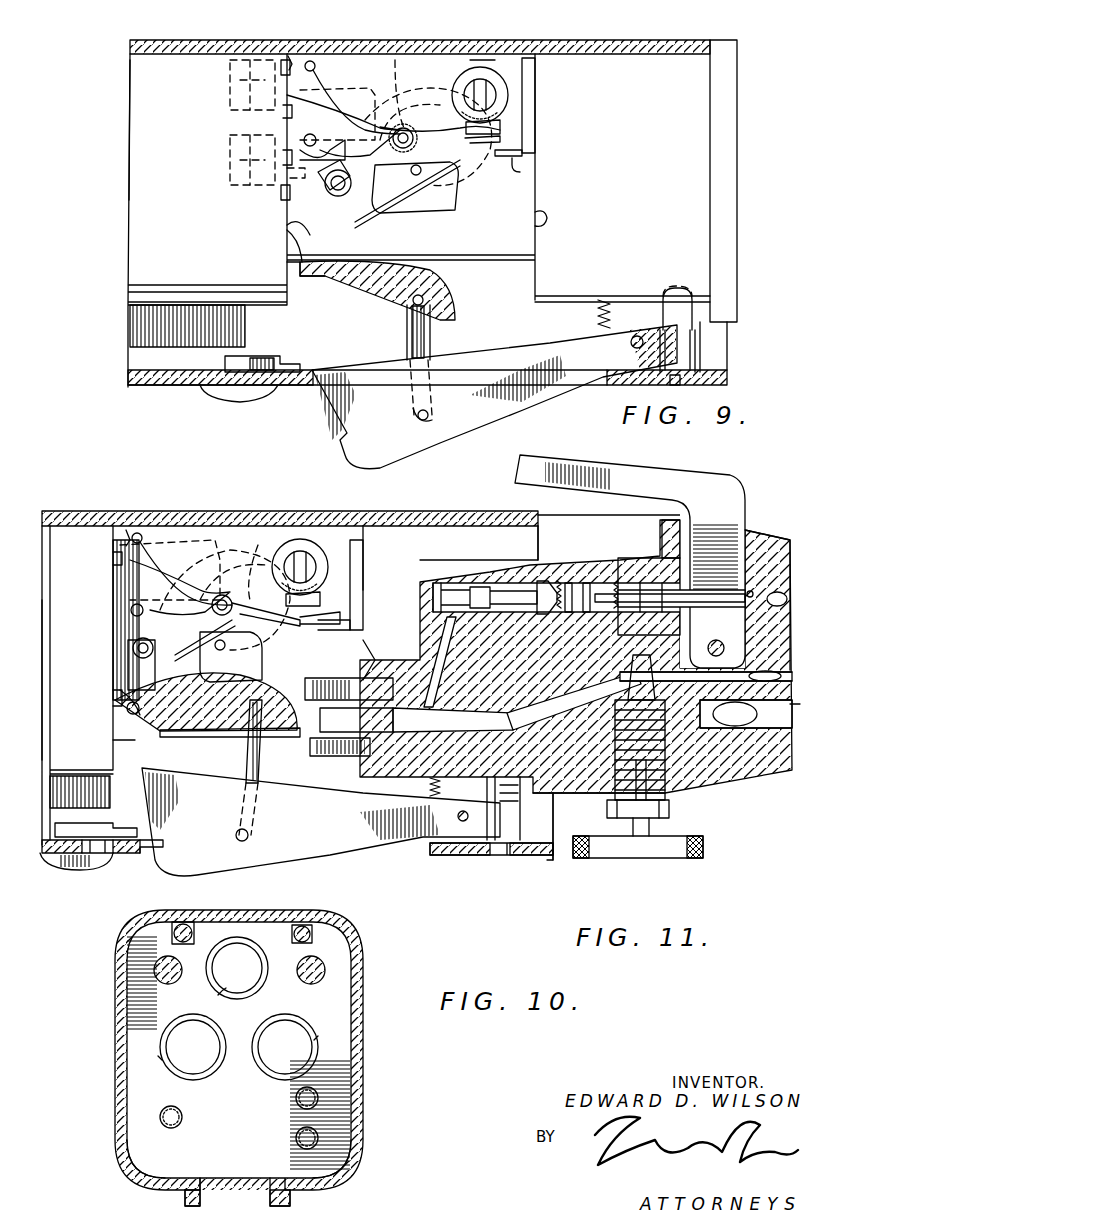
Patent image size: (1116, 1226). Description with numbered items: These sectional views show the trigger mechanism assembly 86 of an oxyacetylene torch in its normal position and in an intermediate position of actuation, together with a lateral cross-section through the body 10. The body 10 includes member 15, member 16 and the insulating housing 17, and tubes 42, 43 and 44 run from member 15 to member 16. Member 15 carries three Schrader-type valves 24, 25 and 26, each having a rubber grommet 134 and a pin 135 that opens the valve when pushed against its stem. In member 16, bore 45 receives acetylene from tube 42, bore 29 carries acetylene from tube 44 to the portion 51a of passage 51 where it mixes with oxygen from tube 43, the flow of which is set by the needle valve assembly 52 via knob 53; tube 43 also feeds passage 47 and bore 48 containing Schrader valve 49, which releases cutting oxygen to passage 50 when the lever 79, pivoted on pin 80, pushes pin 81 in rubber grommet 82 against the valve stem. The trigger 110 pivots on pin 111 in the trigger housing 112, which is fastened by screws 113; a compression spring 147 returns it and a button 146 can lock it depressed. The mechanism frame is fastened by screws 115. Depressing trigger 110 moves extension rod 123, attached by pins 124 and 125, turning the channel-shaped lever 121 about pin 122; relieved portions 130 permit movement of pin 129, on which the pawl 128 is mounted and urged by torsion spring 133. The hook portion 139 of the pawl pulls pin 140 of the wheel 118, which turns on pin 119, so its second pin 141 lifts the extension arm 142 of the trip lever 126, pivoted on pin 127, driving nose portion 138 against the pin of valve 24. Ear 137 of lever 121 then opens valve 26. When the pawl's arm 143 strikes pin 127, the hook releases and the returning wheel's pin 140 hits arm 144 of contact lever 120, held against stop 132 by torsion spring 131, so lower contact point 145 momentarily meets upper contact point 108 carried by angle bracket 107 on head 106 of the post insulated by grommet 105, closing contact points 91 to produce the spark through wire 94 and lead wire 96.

In FIG. 9, the body 10 is at (300, 24).
In FIG. 11, the body 10 is at (393, 508).
In FIG. 10, the body 10 is at (365, 973).
In FIG. 9, the member 15 is at (130, 130).
In FIG. 11, the member 15 is at (48, 720).
In FIG. 10, the member 15 is at (145, 1154).
In FIG. 9, the member 16 is at (700, 100).
In FIG. 11, the member 16 is at (470, 530).
In FIG. 10, the housing 17 is at (350, 1160).
In FIG. 10, the Schrader-type valve 24 is at (215, 997).
In FIG. 10, the Schrader-type valve 25 is at (322, 1035).
In FIG. 10, the Schrader-type valve 26 is at (156, 1059).
In FIG. 11, the bore 29 is at (750, 718).
In FIG. 11, the tube 42 is at (308, 740).
In FIG. 10, the tube 42 is at (320, 1098).
In FIG. 11, the tube 43 is at (345, 756).
In FIG. 10, the tube 43 is at (158, 1118).
In FIG. 11, the tube 44 is at (310, 752).
In FIG. 10, the tube 44 is at (320, 1135).
In FIG. 11, the bore 45 is at (680, 790).
In FIG. 11, the passage 47 is at (362, 618).
In FIG. 11, the bore 48 is at (450, 585).
In FIG. 11, the Schrader valve 49 is at (545, 578).
In FIG. 11, the passage 50 is at (750, 565).
In FIG. 11, the passage 51 is at (568, 793).
In FIG. 11, the portion of passage 51a is at (788, 672).
In FIG. 11, the needle valve assembly 52 is at (686, 818).
In FIG. 11, the knob 53 is at (703, 850).
In FIG. 11, the lever 79 is at (550, 470).
In FIG. 11, the pin 80 is at (714, 640).
In FIG. 11, the pin 81 is at (715, 555).
In FIG. 11, the rubber grommet 82 is at (668, 565).
In FIG. 9, the trigger mechanism assembly 86 is at (488, 54).
In FIG. 11, the trigger mechanism assembly 86 is at (126, 748).
In FIG. 9, the contact points 91 is at (453, 120).
In FIG. 9, the wire 94 is at (290, 58).
In FIG. 11, the wire 94 is at (132, 526).
In FIG. 10, the wire 94 is at (150, 922).
In FIG. 10, the lead wire 96 is at (300, 922).
In FIG. 9, the insulating grommet 105 is at (524, 55).
In FIG. 11, the insulating grommet 105 is at (355, 540).
In FIG. 9, the head 106 is at (500, 90).
In FIG. 11, the head 106 is at (310, 566).
In FIG. 9, the angle bracket 107 is at (488, 114).
In FIG. 11, the angle bracket 107 is at (318, 592).
In FIG. 9, the upper contact point 108 is at (490, 130).
In FIG. 11, the upper contact point 108 is at (318, 603).
In FIG. 9, the trigger 110 is at (335, 418).
In FIG. 11, the trigger 110 is at (321, 822).
In FIG. 9, the pin 111 is at (632, 344).
In FIG. 11, the pin 111 is at (466, 828).
In FIG. 9, the trigger housing 112 is at (185, 388).
In FIG. 11, the trigger housing 112 is at (548, 862).
In FIG. 10, the trigger housing 112 is at (188, 1196).
In FIG. 11, the screws 113 is at (515, 855).
In FIG. 10, the screws 115 is at (160, 972).
In FIG. 9, the wheel 118 is at (459, 57).
In FIG. 11, the wheel 118 is at (267, 536).
In FIG. 9, the pin 119 is at (405, 60).
In FIG. 11, the pin 119 is at (290, 540).
In FIG. 9, the contact lever 120 is at (515, 154).
In FIG. 9, the channel-shaped lever 121 is at (355, 280).
In FIG. 11, the channel-shaped lever 121 is at (200, 738).
In FIG. 9, the pin 122 is at (285, 262).
In FIG. 11, the pin 122 is at (125, 712).
In FIG. 9, the extension rod 123 is at (432, 340).
In FIG. 11, the extension rod 123 is at (238, 768).
In FIG. 9, the pin 124 is at (437, 410).
In FIG. 11, the pin 124 is at (235, 830).
In FIG. 9, the pin 125 is at (445, 290).
In FIG. 11, the pin 125 is at (268, 725).
In FIG. 9, the trip lever 126 is at (360, 60).
In FIG. 11, the trip lever 126 is at (78, 526).
In FIG. 9, the pin 127 is at (300, 140).
In FIG. 11, the pin 127 is at (132, 603).
In FIG. 9, the pawl 128 is at (340, 100).
In FIG. 11, the pawl 128 is at (120, 628).
In FIG. 9, the pin 129 is at (330, 198).
In FIG. 11, the pin 129 is at (128, 646).
In FIG. 9, the relieved portions 130 is at (280, 180).
In FIG. 9, the torsion spring 131 is at (300, 98).
In FIG. 11, the torsion spring 131 is at (175, 526).
In FIG. 9, the stop 132 is at (515, 158).
In FIG. 11, the stop 132 is at (330, 628).
In FIG. 9, the torsion spring 133 is at (300, 225).
In FIG. 11, the torsion spring 133 is at (128, 680).
In FIG. 9, the rubber grommet 134 is at (285, 74).
In FIG. 10, the rubber grommet 134 is at (272, 985).
In FIG. 9, the pin 135 is at (283, 70).
In FIG. 11, the pin 135 is at (120, 700).
In FIG. 10, the pin 135 is at (240, 958).
In FIG. 9, the ear 137 is at (270, 160).
In FIG. 11, the ear 137 is at (126, 663).
In FIG. 9, the nose portion 138 is at (283, 111).
In FIG. 11, the nose portion 138 is at (110, 560).
In FIG. 9, the hook portion 139 is at (430, 188).
In FIG. 11, the hook portion 139 is at (250, 665).
In FIG. 9, the pin 140 is at (400, 178).
In FIG. 11, the pin 140 is at (205, 650).
In FIG. 9, the second pin 141 is at (440, 200).
In FIG. 11, the second pin 141 is at (240, 535).
In FIG. 9, the extension arm portion 142 is at (415, 50).
In FIG. 11, the extension arm portion 142 is at (222, 530).
In FIG. 11, the extension arm portion 143 is at (112, 586).
In FIG. 9, the extension arm portion 144 is at (440, 171).
In FIG. 11, the extension arm portion 144 is at (240, 645).
In FIG. 9, the lower contact point 145 is at (505, 140).
In FIG. 11, the lower contact point 145 is at (290, 622).
In FIG. 9, the button 146 is at (240, 392).
In FIG. 11, the button 146 is at (75, 855).
In FIG. 9, the compression spring 147 is at (608, 320).
In FIG. 11, the compression spring 147 is at (435, 785).